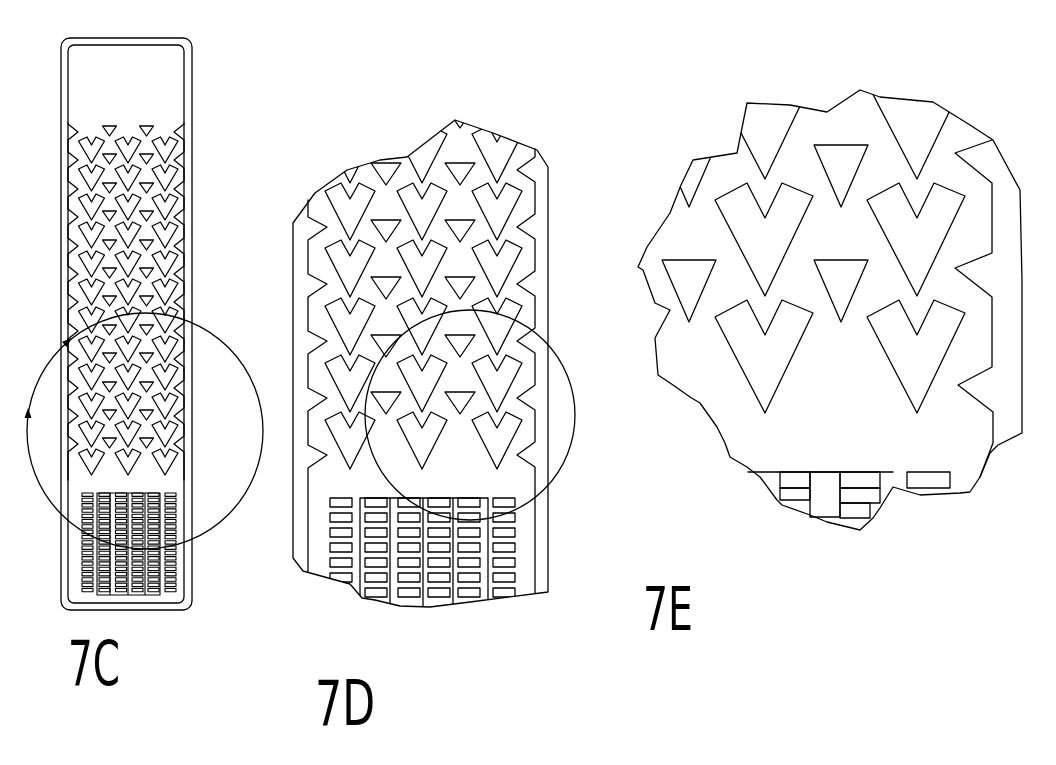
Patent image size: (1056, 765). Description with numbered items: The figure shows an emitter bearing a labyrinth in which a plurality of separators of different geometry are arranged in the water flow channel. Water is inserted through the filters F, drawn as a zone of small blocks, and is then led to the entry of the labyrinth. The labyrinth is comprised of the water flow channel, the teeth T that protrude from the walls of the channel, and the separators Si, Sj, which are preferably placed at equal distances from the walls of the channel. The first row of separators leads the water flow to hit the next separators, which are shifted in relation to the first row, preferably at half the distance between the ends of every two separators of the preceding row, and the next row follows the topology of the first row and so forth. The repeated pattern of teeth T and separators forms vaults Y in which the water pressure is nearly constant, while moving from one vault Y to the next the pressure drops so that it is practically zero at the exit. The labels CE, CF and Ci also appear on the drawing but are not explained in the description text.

In FIG. 7C, the tread strip (continuous element) CE is at (143, 401).
In FIG. 7D, the tread strip (continuous element) CE is at (418, 349).
In FIG. 7D, the teeth T is at (307, 330).
In FIG. 7E, the teeth T is at (963, 385).
In FIG. 7D, the V-shaped cavity CF is at (411, 350).
In FIG. 7E, the V-shaped cavity CF is at (769, 396).
In FIG. 7D, the cavity / element between cavities Ci is at (385, 457).
In FIG. 7C, the filters F is at (128, 583).
In FIG. 7D, the filters F is at (480, 583).
In FIG. 7E, the vaults Y is at (769, 383).
In FIG. 7E, the separator Si is at (888, 363).
In FIG. 7E, the separator Sj is at (788, 368).